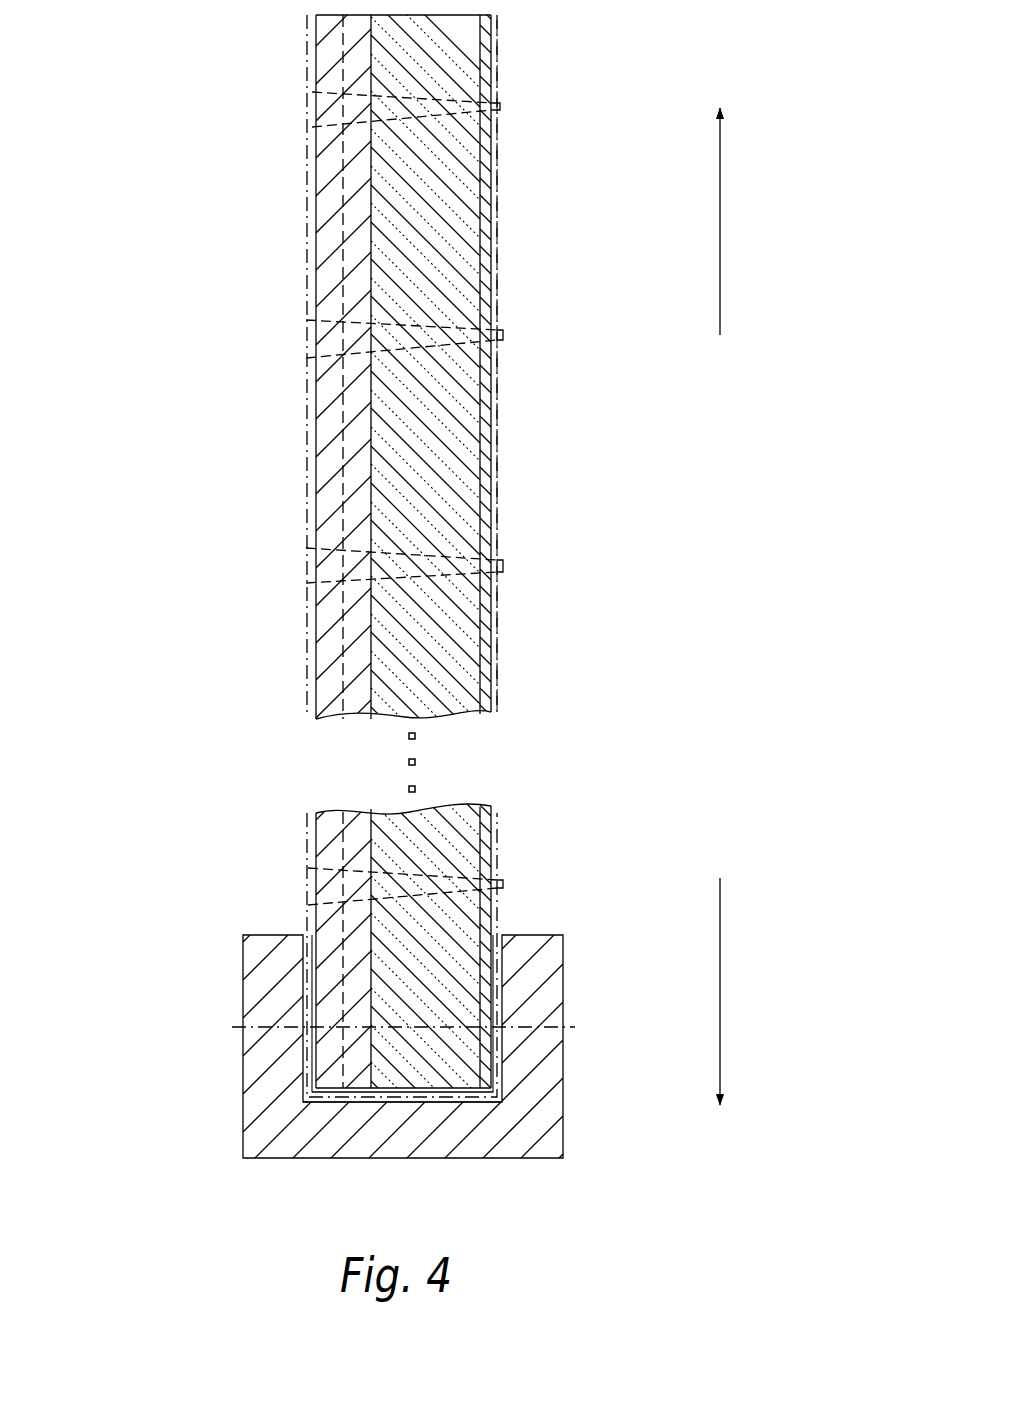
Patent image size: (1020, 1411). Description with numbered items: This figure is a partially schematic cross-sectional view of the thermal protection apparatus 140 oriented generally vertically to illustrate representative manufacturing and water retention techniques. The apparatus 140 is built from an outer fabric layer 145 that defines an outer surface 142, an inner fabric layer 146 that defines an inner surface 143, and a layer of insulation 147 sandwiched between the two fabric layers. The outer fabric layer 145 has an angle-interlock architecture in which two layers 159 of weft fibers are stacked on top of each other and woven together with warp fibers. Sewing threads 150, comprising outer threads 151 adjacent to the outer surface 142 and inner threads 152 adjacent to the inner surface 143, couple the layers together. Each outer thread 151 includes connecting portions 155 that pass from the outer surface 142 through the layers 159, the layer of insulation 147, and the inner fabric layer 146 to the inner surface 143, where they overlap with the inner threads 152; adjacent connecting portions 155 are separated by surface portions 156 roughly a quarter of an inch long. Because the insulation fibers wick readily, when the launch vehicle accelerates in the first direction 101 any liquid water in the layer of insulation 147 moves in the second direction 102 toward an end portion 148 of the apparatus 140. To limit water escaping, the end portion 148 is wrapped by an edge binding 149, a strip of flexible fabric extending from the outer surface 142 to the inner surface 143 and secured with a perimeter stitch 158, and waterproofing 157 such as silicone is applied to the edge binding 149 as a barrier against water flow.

The first direction 101 is at (728, 185).
The second direction 102 is at (728, 967).
The thermal protection apparatus 140 is at (240, 342).
The outer surface 142 is at (281, 238).
The inner surface 143 is at (524, 214).
The outer fabric layer 145 is at (350, 473).
The inner fabric layer 146 is at (483, 432).
The layer of insulation 147 is at (463, 478).
The end portion 148 is at (166, 1027).
The edge binding 149 is at (555, 1100).
The sewing threads 150 is at (281, 162).
The outer threads 151 is at (312, 410).
The inner threads 152 is at (497, 293).
The connecting portions 155 is at (470, 560).
The surface portions 156 is at (309, 583).
The waterproofing 157 is at (390, 1098).
The perimeter stitch 158 is at (525, 1022).
The layers of weft fibers 159 is at (365, 80).